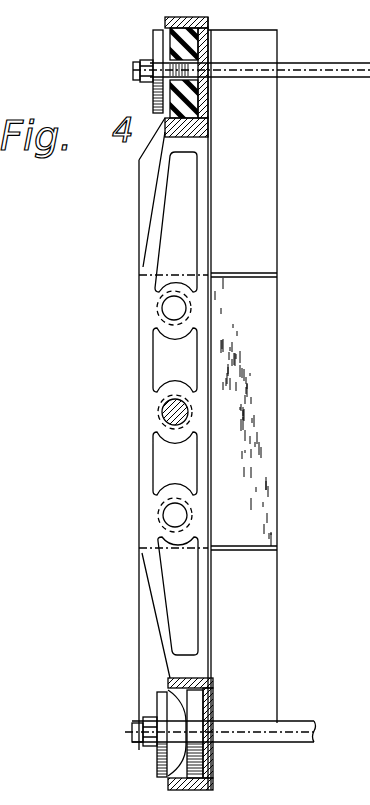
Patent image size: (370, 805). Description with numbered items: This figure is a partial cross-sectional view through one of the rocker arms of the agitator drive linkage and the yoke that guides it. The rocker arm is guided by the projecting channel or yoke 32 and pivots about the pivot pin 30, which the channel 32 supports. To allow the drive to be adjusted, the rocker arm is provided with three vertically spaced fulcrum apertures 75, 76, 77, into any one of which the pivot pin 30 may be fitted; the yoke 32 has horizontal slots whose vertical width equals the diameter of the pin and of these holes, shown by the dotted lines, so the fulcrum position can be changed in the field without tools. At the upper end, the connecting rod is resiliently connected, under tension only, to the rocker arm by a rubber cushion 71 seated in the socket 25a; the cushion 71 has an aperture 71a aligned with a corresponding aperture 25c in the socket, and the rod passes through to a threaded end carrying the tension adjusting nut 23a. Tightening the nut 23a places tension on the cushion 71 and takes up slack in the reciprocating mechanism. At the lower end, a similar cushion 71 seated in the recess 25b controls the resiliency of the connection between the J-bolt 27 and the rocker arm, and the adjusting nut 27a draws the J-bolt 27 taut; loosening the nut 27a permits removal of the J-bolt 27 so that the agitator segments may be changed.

The socket 25a is at (185, 18).
The rubber cushion 71 is at (200, 40).
The aperture 71a is at (168, 68).
The tension adjusting nut 23a is at (147, 60).
The aperture 25c is at (210, 107).
The channel 32 is at (152, 207).
The aperture 77 is at (176, 302).
The pivot pin 30 is at (177, 404).
The aperture 76 is at (187, 413).
The aperture 75 is at (166, 516).
The J-bolt 27 is at (300, 735).
The adjusting nut 27a is at (150, 748).
The socket 25b is at (193, 785).